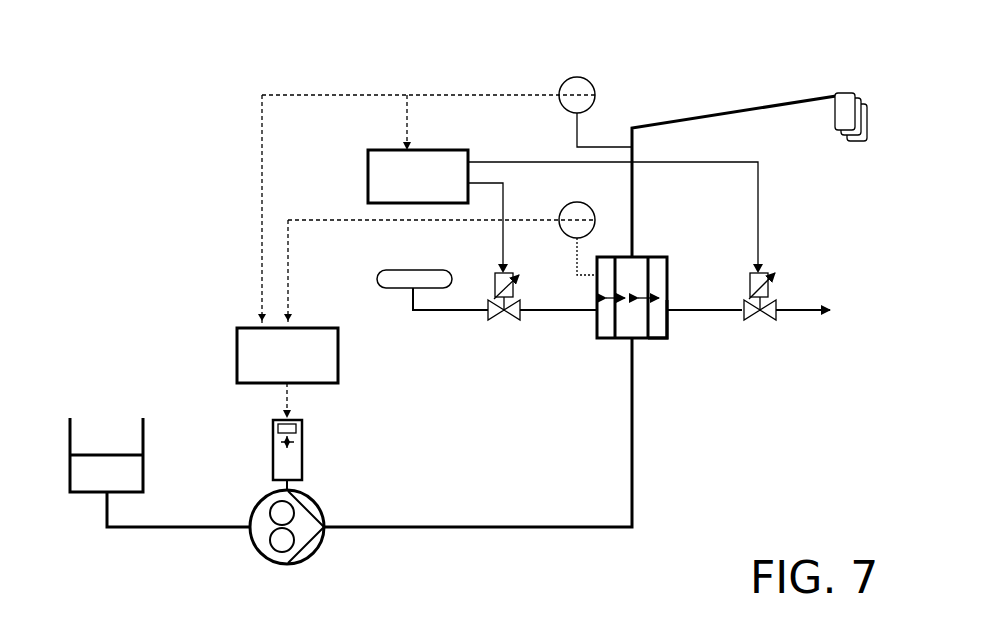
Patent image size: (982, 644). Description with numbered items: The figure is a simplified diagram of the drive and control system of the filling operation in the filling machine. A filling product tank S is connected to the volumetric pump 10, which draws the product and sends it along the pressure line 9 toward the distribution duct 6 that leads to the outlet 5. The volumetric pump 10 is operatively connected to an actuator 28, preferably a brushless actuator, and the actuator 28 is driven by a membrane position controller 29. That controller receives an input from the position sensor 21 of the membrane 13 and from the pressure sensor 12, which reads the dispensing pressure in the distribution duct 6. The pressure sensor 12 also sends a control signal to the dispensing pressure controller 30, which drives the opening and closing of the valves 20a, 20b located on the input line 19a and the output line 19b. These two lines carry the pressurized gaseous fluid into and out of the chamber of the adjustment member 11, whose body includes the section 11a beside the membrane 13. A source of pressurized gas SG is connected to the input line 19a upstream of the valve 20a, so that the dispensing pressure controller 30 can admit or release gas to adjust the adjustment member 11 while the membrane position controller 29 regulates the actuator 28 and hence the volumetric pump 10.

The load / consumer (stacked plates) 5 is at (876, 96).
The distribution duct 6 is at (690, 118).
The pressure line 9 is at (562, 530).
The volumetric pump 10 is at (312, 557).
The adjustment member 11 is at (675, 244).
The valve unit section 11a is at (656, 327).
The pressure sensor 12 is at (583, 80).
The membrane 13 is at (660, 292).
The input line 19a is at (565, 315).
The output line 19b is at (718, 315).
The valve 20a is at (497, 320).
The valve 20b is at (775, 318).
The position sensor 21 is at (585, 205).
The actuator 28 is at (302, 450).
The membrane position controller 29 is at (237, 355).
The dispensing pressure controller 30 is at (368, 158).
The filling product tank S is at (83, 486).
The source of pressurized gas SG is at (397, 289).